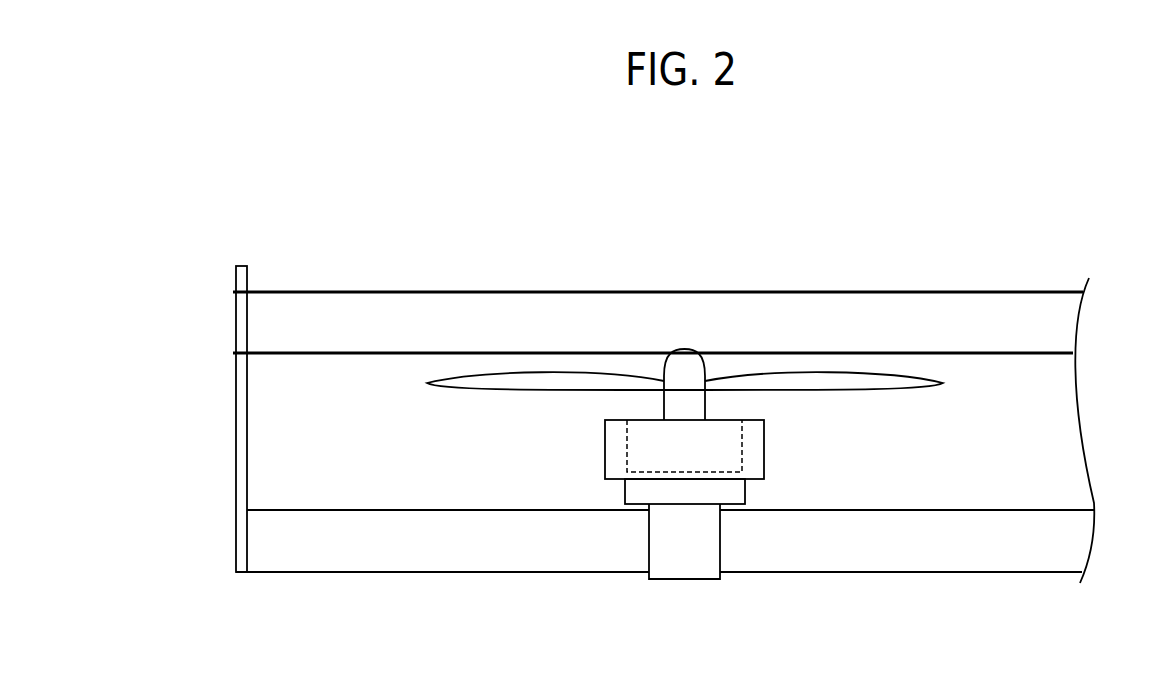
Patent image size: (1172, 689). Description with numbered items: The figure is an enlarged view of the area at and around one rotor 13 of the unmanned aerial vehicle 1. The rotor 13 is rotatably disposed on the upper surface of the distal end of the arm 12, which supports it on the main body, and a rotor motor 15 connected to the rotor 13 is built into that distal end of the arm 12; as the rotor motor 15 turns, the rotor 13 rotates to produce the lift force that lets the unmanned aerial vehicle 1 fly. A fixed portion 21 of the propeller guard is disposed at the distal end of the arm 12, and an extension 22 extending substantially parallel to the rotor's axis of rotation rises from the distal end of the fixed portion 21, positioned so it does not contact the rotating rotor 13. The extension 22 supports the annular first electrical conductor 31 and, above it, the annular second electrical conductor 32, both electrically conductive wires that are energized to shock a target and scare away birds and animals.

The unmanned aerial vehicle 1 is at (979, 193).
The arm 12 is at (892, 558).
The rotor 13 is at (495, 383).
The rotor motor 15 is at (742, 450).
The fixed portion 21 is at (510, 557).
The extension 22 is at (244, 432).
The first electrical conductor 31 is at (1047, 353).
The second electrical conductor 32 is at (1037, 292).